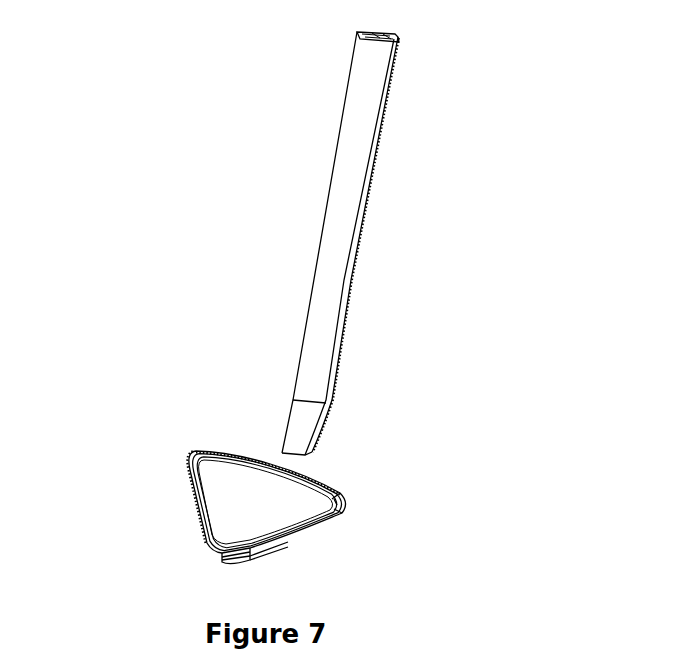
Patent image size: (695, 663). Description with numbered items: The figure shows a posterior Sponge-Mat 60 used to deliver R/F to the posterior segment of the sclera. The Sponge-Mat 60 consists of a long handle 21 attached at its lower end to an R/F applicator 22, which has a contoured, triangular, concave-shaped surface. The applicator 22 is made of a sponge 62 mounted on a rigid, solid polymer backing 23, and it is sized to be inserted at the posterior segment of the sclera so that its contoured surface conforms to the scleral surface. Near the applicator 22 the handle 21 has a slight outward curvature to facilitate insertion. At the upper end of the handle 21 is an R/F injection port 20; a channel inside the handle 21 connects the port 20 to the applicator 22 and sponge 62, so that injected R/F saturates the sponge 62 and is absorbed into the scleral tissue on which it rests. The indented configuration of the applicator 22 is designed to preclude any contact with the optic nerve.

The R/F injection port 20 is at (390, 32).
The handle 21 is at (348, 245).
The R/F applicator 22 is at (232, 563).
The rigid, solid polymer backing 23 is at (343, 520).
The posterior Sponge-Mat 60 is at (230, 326).
The sponge 62 is at (260, 511).